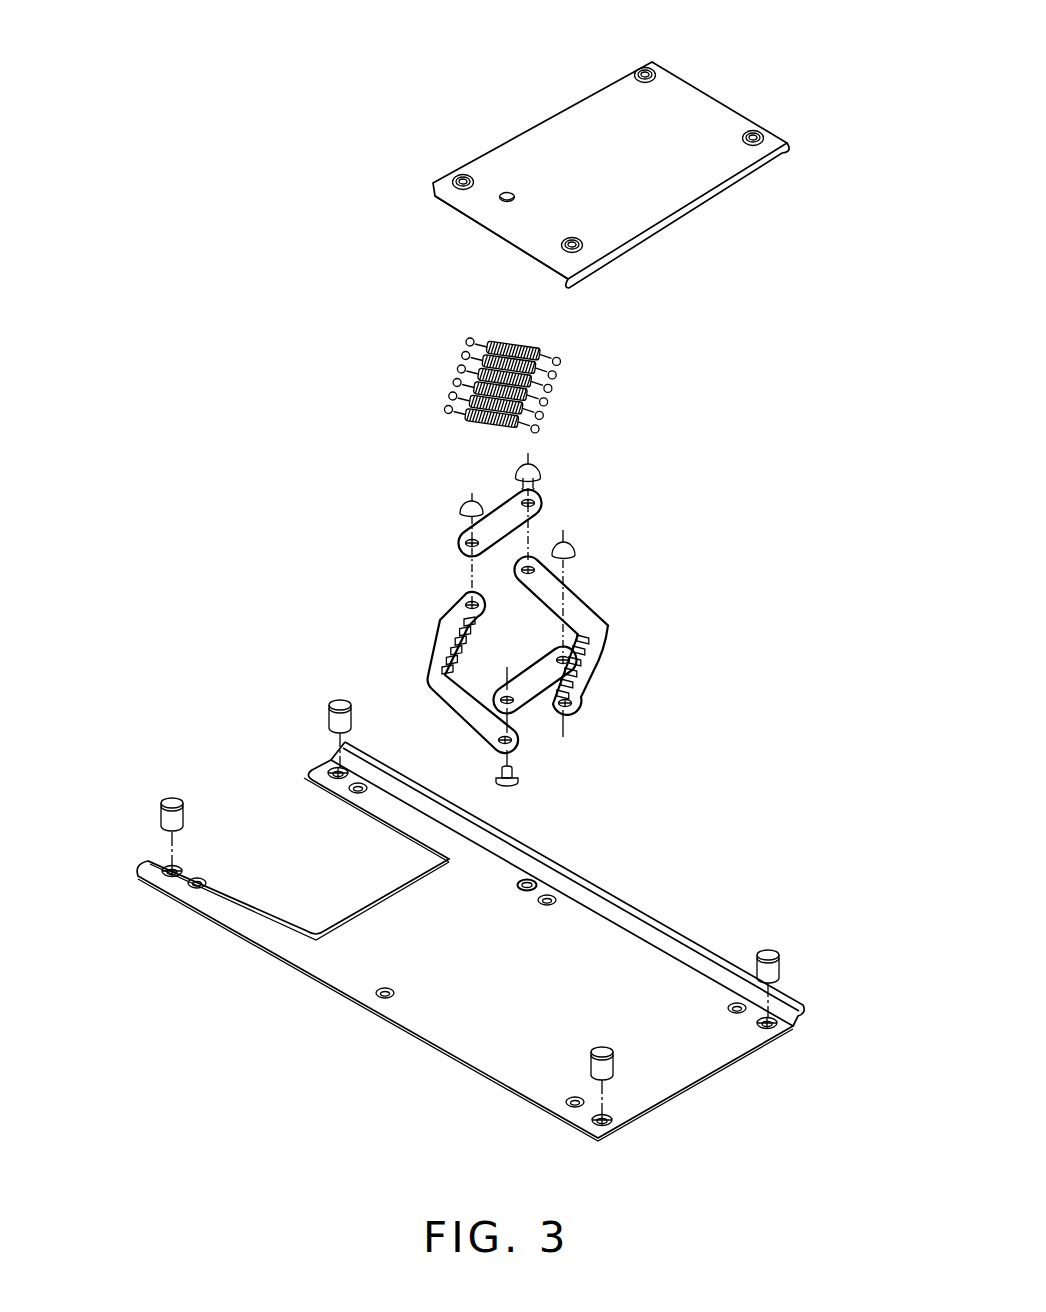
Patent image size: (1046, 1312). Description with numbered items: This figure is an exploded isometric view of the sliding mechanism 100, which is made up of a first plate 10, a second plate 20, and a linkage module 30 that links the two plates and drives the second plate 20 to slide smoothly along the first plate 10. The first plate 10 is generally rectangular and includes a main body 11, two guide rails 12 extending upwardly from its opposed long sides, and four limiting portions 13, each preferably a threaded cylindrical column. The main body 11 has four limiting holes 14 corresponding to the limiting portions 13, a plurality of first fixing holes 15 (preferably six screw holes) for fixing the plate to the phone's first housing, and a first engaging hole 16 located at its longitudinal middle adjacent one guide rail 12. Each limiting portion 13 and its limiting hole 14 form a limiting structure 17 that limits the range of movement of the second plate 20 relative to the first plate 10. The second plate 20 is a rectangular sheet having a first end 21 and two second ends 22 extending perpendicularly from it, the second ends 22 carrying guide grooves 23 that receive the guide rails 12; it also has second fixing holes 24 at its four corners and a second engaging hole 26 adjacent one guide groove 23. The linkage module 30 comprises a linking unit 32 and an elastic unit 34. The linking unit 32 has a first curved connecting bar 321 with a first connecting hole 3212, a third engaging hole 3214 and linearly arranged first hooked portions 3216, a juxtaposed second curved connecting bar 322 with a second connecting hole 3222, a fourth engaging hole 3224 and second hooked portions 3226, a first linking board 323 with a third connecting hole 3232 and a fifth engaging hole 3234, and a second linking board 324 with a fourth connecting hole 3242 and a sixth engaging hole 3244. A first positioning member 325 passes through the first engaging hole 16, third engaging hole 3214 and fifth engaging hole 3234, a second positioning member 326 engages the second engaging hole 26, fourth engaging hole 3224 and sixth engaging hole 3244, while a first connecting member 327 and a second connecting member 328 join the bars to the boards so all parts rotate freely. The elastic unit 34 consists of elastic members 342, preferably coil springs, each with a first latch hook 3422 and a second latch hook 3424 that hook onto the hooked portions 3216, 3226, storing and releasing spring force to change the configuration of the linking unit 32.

The sliding mechanism 100 is at (552, 27).
The first plate 10 is at (709, 932).
The main body 11 is at (502, 1024).
The guide rails 12 is at (642, 912).
The limiting portions 13 is at (332, 700).
The limiting holes 14 is at (332, 770).
The first fixing holes 15 is at (352, 790).
The first engaging hole 16 is at (534, 882).
The limiting structure 17 is at (268, 678).
The second plate 20 is at (725, 88).
The first end 21 is at (658, 188).
The second ends 22 is at (488, 215).
The guide grooves 23 is at (788, 152).
The second fixing holes 24 is at (653, 68).
The second engaging hole 26 is at (505, 192).
The linkage module 30 is at (767, 335).
The linking unit 32 is at (683, 546).
The elastic unit 34 is at (664, 351).
The elastic members 342 is at (514, 340).
The first latch hook 3422 is at (562, 368).
The second latch hook 3424 is at (466, 346).
The first curved connecting bar 321 is at (608, 635).
The first connecting hole 3212 is at (570, 706).
The third engaging hole 3214 is at (535, 565).
The first hooked portions 3216 is at (593, 673).
The second curved connecting bar 322 is at (433, 686).
The second connecting hole 3222 is at (466, 604).
The fourth engaging hole 3224 is at (514, 745).
The second hooked portions 3226 is at (448, 646).
The first linking board 323 is at (484, 510).
The third connecting hole 3232 is at (462, 546).
The fifth engaging hole 3234 is at (540, 497).
The second linking board 324 is at (540, 675).
The fourth connecting hole 3242 is at (570, 652).
The sixth engaging hole 3244 is at (518, 706).
The first positioning member 325 is at (519, 468).
The second positioning member 326 is at (497, 776).
The first connecting member 327 is at (448, 509).
The second connecting member 328 is at (575, 546).